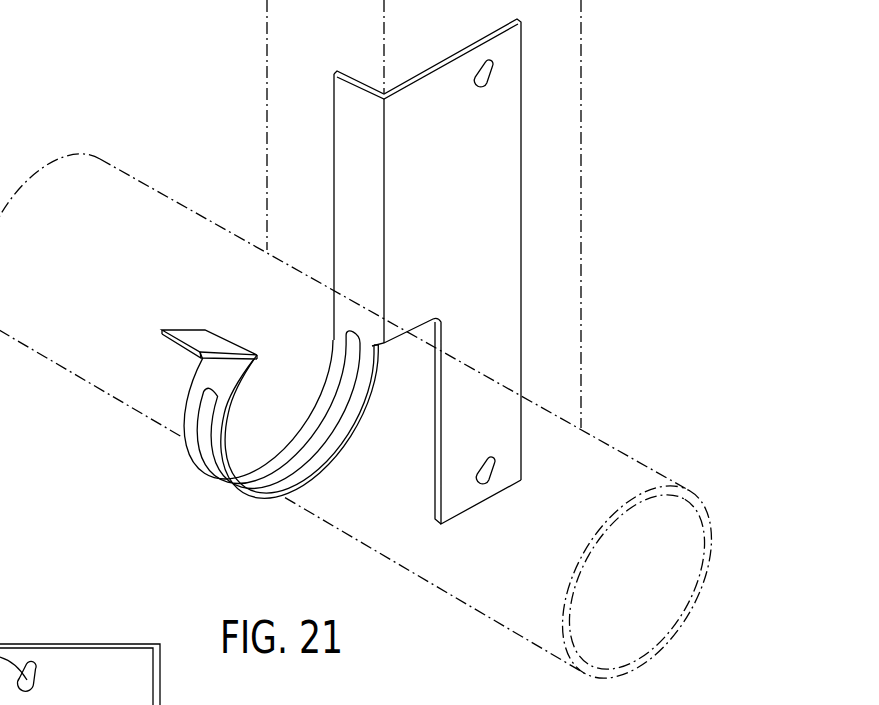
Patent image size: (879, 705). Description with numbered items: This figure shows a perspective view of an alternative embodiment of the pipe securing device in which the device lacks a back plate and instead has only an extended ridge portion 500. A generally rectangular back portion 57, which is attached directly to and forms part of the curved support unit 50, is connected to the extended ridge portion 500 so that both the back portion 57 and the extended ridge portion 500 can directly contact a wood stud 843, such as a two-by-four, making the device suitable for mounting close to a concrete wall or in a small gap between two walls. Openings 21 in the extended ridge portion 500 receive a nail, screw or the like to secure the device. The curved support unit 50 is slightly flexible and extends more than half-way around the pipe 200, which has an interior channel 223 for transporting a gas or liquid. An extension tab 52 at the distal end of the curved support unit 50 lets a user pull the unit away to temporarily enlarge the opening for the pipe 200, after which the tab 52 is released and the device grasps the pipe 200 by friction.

The opening 21 is at (490, 60).
The generally rectangular back portion 57 is at (368, 163).
The extended ridge portion 500 is at (371, 352).
The wood stud 843 is at (575, 205).
The extension tab 52 is at (202, 340).
The curved support unit 50 is at (260, 407).
The pipe 200 is at (371, 429).
The interior channel 223 is at (647, 605).